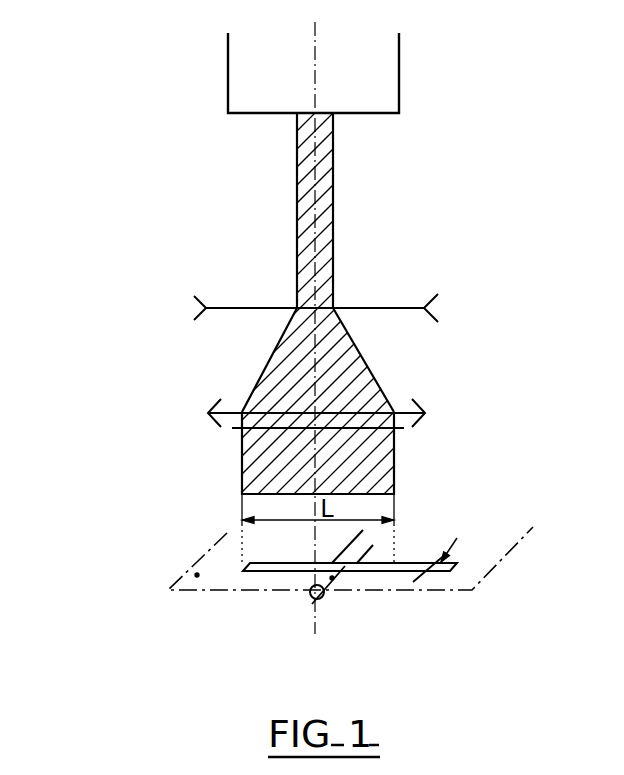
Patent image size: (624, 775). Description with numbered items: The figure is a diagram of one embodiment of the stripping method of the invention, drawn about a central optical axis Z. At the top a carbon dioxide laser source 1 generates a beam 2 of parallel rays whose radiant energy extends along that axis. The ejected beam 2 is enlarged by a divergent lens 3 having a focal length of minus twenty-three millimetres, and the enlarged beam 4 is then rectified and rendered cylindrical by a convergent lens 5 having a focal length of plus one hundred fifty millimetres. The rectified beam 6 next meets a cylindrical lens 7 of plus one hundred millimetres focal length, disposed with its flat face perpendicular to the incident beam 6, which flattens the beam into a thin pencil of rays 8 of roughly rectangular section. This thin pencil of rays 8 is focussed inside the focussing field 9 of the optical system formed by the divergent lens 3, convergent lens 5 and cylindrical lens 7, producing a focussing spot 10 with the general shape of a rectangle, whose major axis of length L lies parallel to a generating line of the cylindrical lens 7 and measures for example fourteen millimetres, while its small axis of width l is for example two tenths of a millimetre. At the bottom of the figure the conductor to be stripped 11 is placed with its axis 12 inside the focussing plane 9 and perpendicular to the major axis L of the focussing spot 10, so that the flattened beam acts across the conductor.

The carbon dioxide laser source 1 is at (400, 85).
The beam 2 is at (334, 178).
The divergent lens 3 is at (192, 302).
The enlarged beam 4 is at (375, 360).
The convergent lens 5 is at (203, 402).
The rectified beam 6 is at (273, 418).
The cylindrical lens 7 is at (412, 433).
The thin pencil of rays 8 is at (241, 480).
The focussing field 9 is at (197, 575).
The focussing spot 10 is at (288, 569).
The conductor to be stripped 11 is at (333, 579).
The axis 12 is at (320, 598).
The central axis Z is at (313, 226).